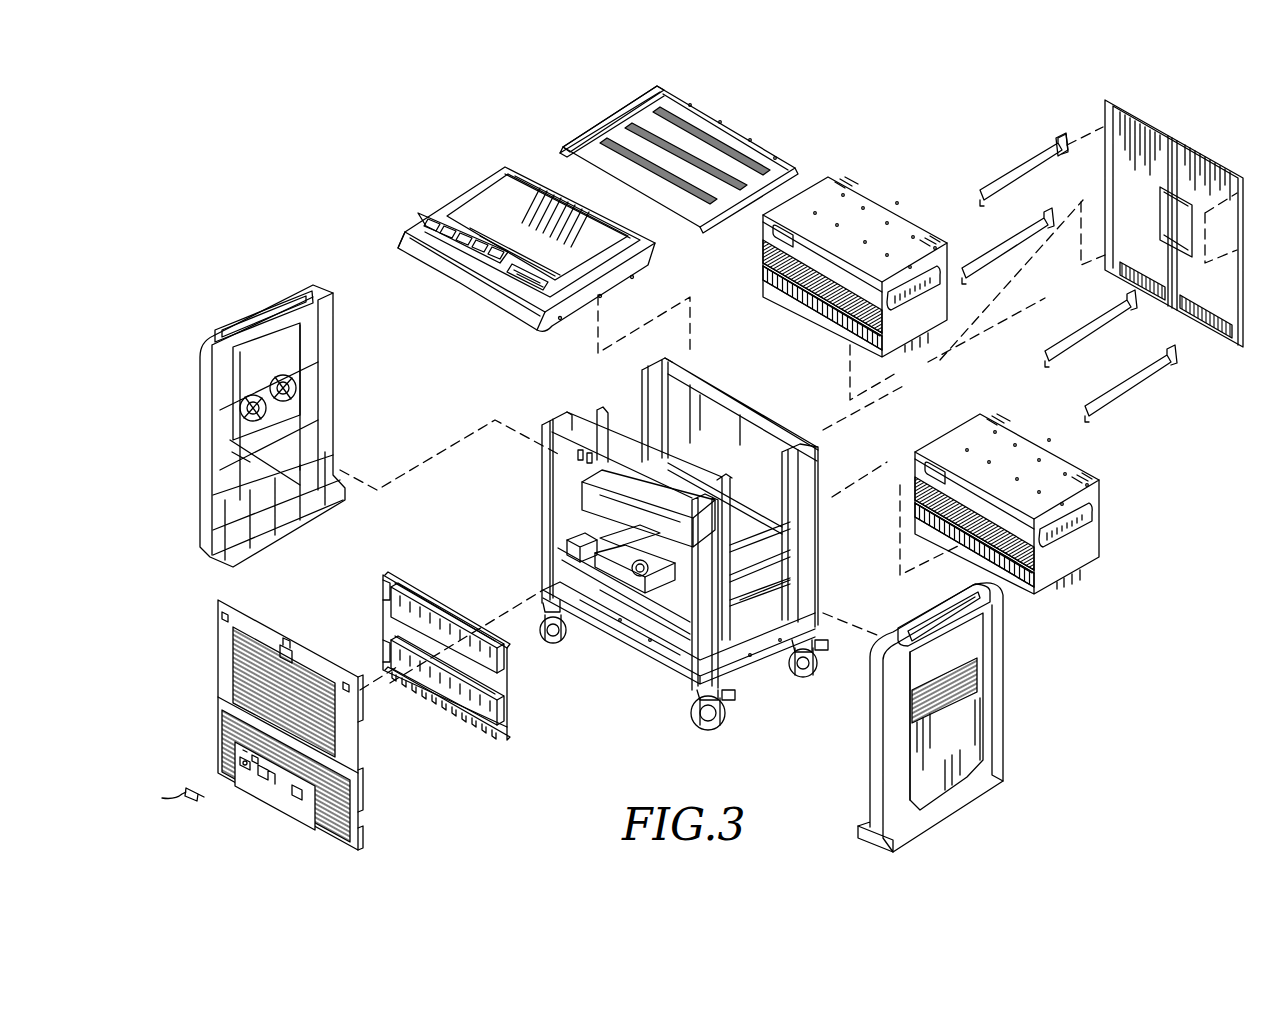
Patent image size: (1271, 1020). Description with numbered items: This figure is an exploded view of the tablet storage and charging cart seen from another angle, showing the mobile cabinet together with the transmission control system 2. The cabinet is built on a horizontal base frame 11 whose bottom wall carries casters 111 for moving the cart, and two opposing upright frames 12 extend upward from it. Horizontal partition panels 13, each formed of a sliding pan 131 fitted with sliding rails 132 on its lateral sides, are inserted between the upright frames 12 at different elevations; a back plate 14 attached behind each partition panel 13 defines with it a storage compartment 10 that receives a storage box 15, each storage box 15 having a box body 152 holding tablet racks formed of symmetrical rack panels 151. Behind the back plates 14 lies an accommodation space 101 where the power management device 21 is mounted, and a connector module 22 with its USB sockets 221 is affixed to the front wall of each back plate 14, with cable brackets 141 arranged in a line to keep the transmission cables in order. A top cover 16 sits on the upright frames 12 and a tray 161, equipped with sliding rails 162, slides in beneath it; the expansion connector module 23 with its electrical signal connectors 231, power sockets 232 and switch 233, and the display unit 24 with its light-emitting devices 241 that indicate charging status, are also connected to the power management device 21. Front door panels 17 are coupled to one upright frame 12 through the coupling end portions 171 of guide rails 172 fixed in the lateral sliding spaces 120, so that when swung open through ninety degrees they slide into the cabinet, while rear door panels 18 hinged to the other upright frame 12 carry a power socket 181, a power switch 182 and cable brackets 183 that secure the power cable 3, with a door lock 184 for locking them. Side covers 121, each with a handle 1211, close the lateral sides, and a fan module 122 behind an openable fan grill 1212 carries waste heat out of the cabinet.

The transmission control system 2 is at (464, 178).
The power cable 3 is at (191, 800).
The storage compartment 10 is at (711, 440).
The accommodation space 101 is at (623, 533).
The horizontal base frame 11 is at (660, 647).
The casters 111 is at (708, 730).
The upright frames 12 is at (563, 475).
The lateral sliding spaces 120 is at (567, 462).
The side covers 121 is at (210, 443).
The handle 1211 is at (215, 330).
The fan grill 1212 is at (978, 670).
The fan module 122 is at (237, 403).
The horizontal partition panels 13 is at (778, 545).
The sliding pan 131 is at (767, 513).
The sliding rails 132 is at (772, 550).
The back plate 14 is at (498, 717).
The cable brackets 141 is at (484, 721).
The storage box 15 is at (862, 183).
The rack panels 151 is at (803, 292).
The box body 152 is at (940, 303).
The top cover 16 is at (585, 240).
The tray 161 is at (657, 100).
The sliding rails 162 is at (603, 124).
The front door panels 17 is at (1205, 170).
The coupling end portion 171 is at (1058, 145).
The guide rails 172 is at (1023, 178).
The rear door panels 18 is at (350, 790).
The power socket 181 is at (243, 767).
The power switch 182 is at (250, 755).
The cable brackets 183 is at (297, 792).
The door lock 184 is at (286, 648).
The power management device 21 is at (627, 565).
The connector module 22 is at (385, 613).
The USB sockets 221 is at (423, 618).
The expansion connector module 23 is at (430, 214).
The electrical signal connectors 231 is at (440, 232).
The power sockets 232 is at (474, 244).
The switch 233 is at (420, 212).
The display unit 24 is at (500, 272).
The light-emitting devices 241 is at (518, 270).